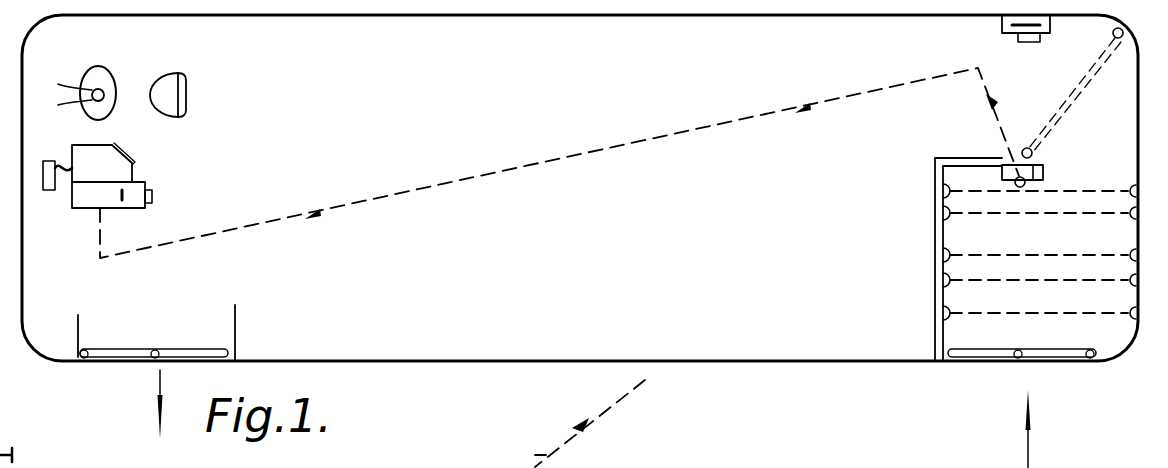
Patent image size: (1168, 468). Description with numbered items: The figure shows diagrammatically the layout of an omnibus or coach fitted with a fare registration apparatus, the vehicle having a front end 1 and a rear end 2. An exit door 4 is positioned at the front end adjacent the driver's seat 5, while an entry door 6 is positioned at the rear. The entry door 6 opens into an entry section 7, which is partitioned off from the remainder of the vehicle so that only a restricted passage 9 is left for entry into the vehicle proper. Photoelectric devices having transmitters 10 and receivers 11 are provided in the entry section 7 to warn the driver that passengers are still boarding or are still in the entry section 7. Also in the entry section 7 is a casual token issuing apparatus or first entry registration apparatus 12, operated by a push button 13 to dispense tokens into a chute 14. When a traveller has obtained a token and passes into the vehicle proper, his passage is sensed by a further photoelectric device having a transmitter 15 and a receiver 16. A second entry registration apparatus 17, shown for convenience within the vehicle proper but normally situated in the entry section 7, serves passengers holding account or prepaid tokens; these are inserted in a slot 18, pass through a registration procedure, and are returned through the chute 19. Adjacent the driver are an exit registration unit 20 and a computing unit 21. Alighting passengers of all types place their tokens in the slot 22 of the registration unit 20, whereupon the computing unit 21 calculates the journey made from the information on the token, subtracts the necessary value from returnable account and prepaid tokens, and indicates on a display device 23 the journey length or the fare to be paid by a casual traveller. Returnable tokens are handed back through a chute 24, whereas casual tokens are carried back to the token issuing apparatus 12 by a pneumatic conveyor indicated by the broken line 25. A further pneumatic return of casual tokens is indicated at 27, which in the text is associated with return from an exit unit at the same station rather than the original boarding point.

The front end 1 is at (22, 86).
The rear end 2 is at (1137, 120).
The exit door 4 is at (130, 360).
The driver's seat 5 is at (186, 78).
The entry door 6 is at (1000, 360).
The entry section 7 is at (1014, 232).
The restricted passage 9 is at (1128, 155).
The transmitters 10 is at (1130, 313).
The receivers 11 is at (940, 313).
The first entry registration apparatus 12 is at (1003, 170).
The push button 13 is at (1026, 185).
The chute 14 is at (1044, 172).
The transmitter 15 is at (1112, 32).
The receiver 16 is at (1027, 147).
The second entry registration apparatus 17 is at (1003, 22).
The slot 18 is at (1008, 30).
The chute 19 is at (1033, 42).
The exit registration unit 20 is at (135, 183).
The computing unit 21 is at (110, 153).
The slot 22 is at (116, 197).
The display device 23 is at (50, 190).
The chute 24 is at (152, 195).
The broken line 25 is at (541, 166).
The pneumatic return 27 is at (562, 437).